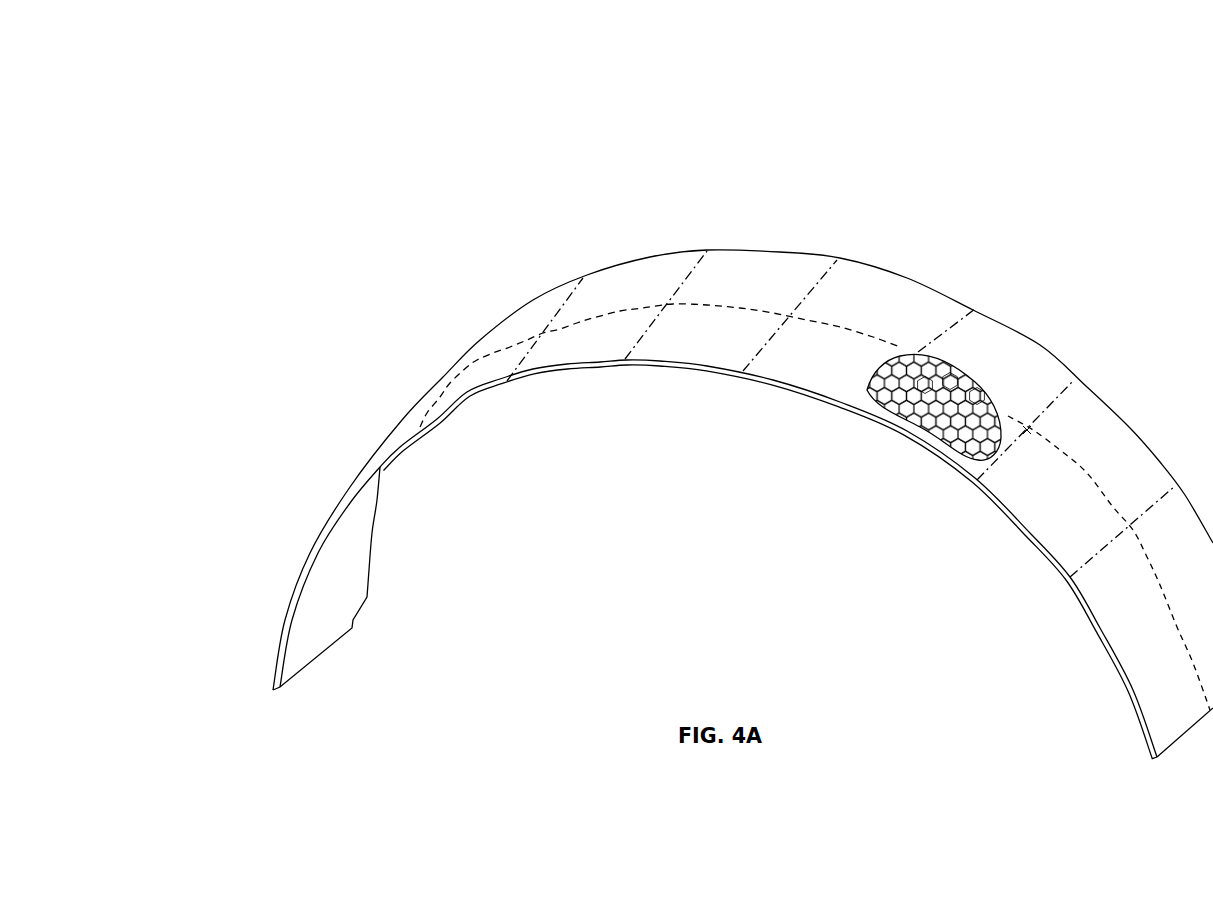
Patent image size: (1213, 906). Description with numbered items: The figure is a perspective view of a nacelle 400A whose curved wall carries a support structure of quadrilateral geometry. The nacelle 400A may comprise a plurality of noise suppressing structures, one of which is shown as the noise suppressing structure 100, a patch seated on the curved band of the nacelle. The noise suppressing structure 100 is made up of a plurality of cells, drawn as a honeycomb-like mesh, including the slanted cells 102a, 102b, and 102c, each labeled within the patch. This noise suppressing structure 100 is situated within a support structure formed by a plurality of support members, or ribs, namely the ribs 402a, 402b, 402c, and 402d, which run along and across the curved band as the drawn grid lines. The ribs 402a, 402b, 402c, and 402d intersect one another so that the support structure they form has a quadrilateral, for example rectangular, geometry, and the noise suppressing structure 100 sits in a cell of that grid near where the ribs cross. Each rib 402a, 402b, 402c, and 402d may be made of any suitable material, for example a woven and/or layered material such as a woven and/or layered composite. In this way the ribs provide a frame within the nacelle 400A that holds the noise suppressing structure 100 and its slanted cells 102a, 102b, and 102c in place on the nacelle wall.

The nacelle 400A is at (530, 132).
The noise suppressing structure 100 is at (915, 368).
The slanted cell 102a is at (927, 383).
The slanted cell 102b is at (947, 390).
The slanted cell 102c is at (985, 393).
The rib 402a is at (873, 388).
The rib 402b is at (1075, 392).
The rib 402c is at (1012, 445).
The rib 402d is at (958, 473).